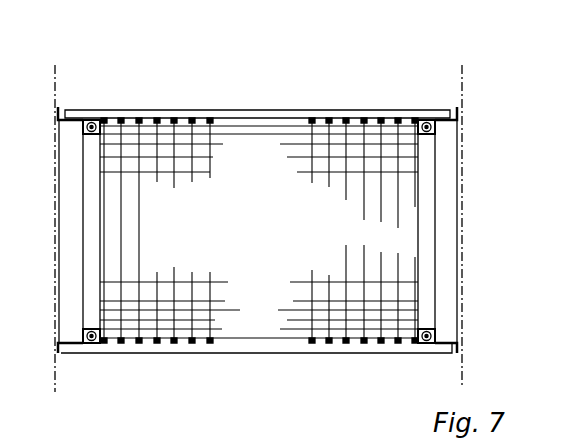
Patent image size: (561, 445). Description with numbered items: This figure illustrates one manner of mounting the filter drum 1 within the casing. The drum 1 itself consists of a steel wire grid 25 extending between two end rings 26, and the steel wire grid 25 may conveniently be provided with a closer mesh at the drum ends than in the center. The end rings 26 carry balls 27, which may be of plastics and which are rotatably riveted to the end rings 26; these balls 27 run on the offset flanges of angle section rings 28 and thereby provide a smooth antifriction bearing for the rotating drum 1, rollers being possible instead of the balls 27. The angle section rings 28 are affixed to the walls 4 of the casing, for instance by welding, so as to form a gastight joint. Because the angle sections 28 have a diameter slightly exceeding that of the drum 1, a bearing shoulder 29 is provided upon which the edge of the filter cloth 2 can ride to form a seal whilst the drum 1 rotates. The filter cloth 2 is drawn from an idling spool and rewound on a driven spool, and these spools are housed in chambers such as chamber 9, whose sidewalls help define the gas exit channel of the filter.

The drum 1 is at (412, 121).
The filter cloth 2 is at (160, 110).
The walls of the casing 4 is at (462, 175).
The chamber 9 is at (72, 349).
The steel wire grid 25 is at (412, 226).
The end rings 26 is at (93, 340).
The balls 27 is at (89, 121).
The angle section rings 28 is at (445, 136).
The bearing shoulder 29 is at (447, 342).